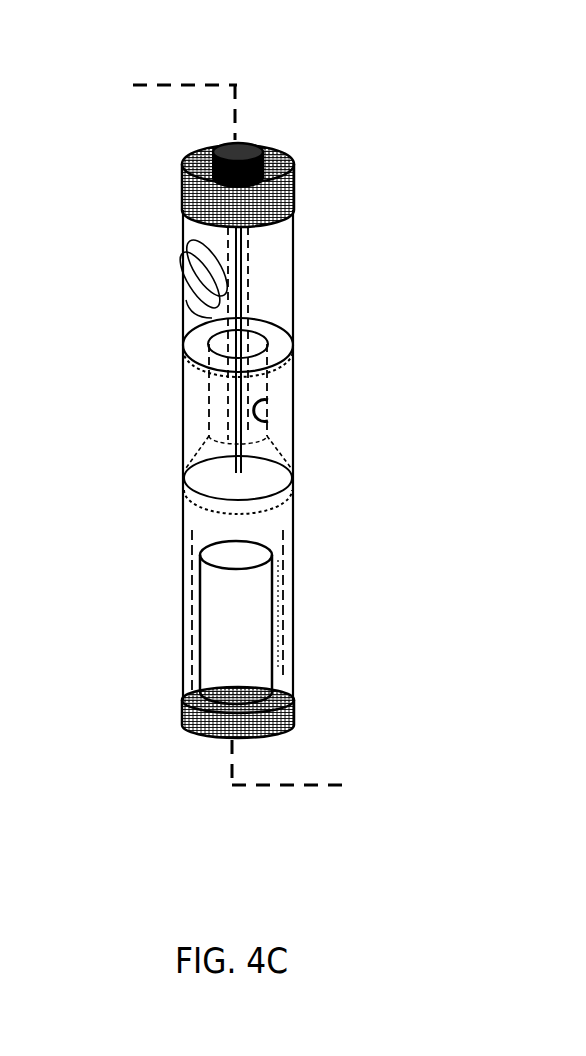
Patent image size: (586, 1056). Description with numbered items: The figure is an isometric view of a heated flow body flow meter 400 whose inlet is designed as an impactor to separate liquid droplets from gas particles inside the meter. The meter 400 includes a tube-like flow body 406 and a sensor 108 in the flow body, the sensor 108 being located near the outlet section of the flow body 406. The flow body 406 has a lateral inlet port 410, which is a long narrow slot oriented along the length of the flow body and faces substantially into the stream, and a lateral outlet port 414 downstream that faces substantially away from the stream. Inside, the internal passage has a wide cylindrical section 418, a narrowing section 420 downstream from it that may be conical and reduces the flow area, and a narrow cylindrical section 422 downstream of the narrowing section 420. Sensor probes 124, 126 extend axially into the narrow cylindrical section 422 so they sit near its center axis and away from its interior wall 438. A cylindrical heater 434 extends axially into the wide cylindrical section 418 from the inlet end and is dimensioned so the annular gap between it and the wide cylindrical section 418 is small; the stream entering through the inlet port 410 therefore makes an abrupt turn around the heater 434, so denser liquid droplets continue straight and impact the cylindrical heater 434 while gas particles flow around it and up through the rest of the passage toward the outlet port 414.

The heated flow body flow meter 400 is at (143, 180).
The sensor 108 is at (245, 150).
The flow body 406 is at (278, 165).
The lateral outlet port 414 is at (190, 277).
The sensor probe 124 is at (243, 392).
The narrow cylindrical section 422 is at (213, 394).
The interior wall 438 is at (270, 419).
The sensor probe 126 is at (232, 432).
The narrowing section 420 is at (206, 471).
The cylindrical heater 434 is at (235, 603).
The wide cylindrical section 418 is at (190, 607).
The lateral inlet port 410 is at (288, 616).